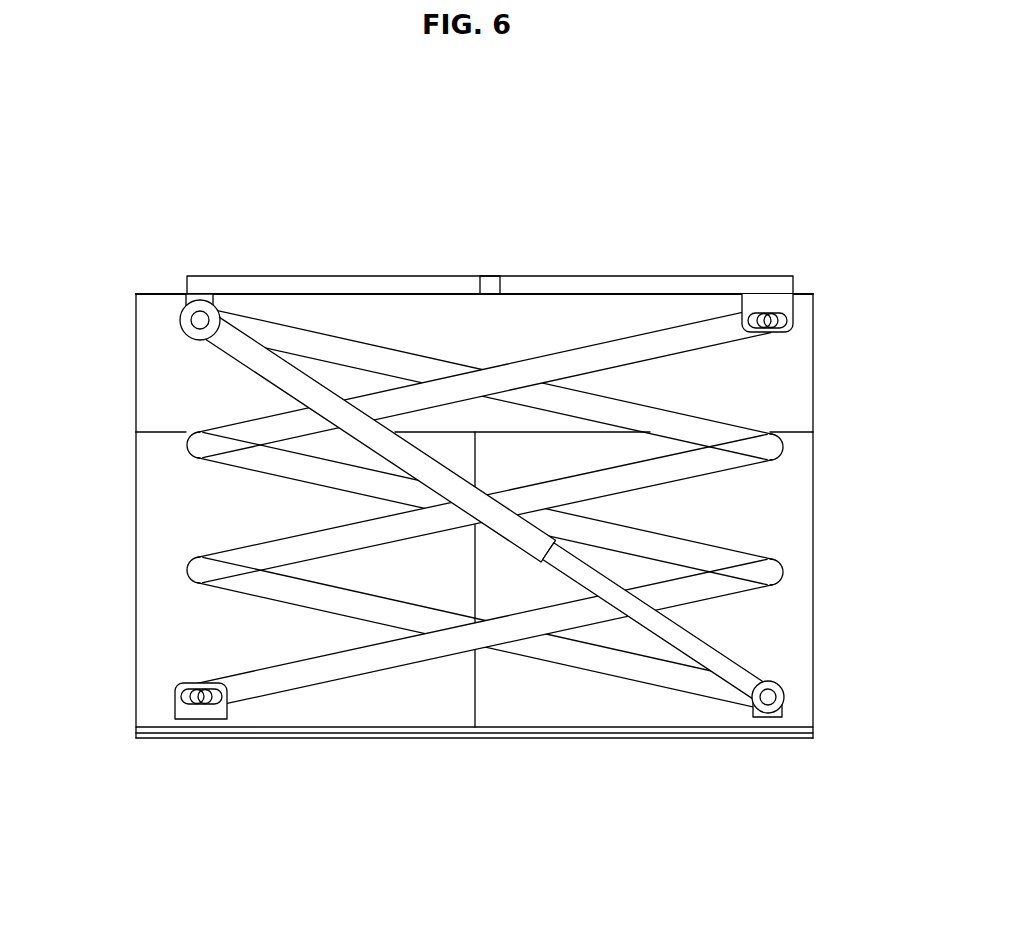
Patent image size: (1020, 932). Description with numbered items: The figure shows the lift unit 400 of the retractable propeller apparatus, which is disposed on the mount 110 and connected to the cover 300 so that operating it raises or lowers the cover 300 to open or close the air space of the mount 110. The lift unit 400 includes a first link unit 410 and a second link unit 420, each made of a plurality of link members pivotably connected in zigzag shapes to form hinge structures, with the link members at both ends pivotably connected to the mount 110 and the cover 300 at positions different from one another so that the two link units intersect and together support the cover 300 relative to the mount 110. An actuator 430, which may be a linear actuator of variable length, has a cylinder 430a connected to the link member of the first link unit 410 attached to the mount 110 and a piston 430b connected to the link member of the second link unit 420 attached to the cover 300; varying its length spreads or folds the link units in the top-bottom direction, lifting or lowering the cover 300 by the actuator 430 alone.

The mount 110 is at (793, 372).
The cover 300 is at (797, 527).
The lift unit 400 is at (400, 516).
The first link unit 410 is at (403, 368).
The second link unit 420 is at (322, 670).
The actuator 430 is at (485, 514).
The cylinder 430a is at (298, 383).
The piston 430b is at (685, 640).